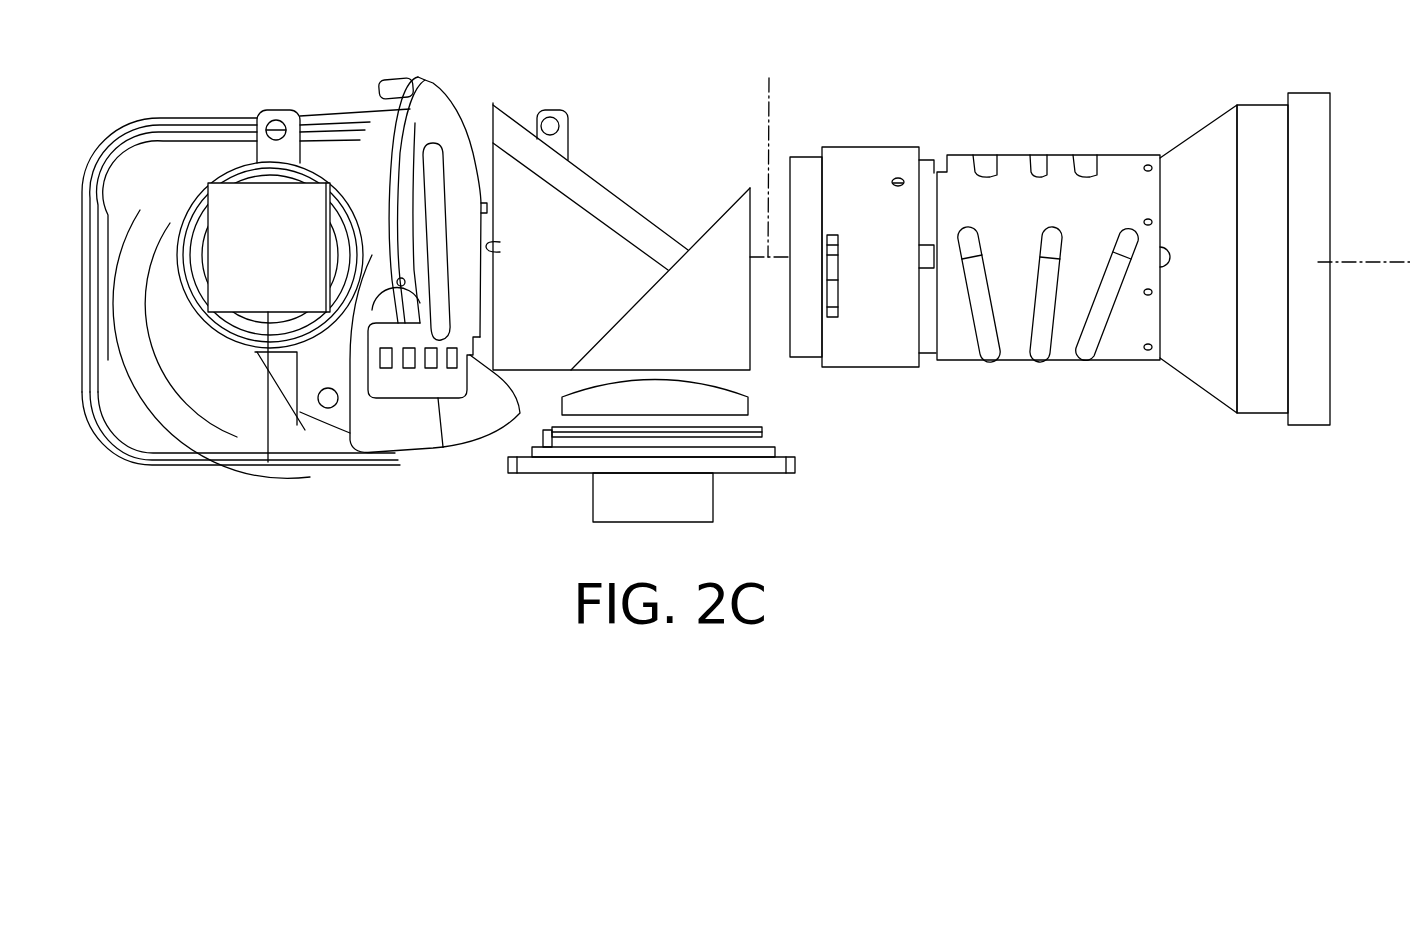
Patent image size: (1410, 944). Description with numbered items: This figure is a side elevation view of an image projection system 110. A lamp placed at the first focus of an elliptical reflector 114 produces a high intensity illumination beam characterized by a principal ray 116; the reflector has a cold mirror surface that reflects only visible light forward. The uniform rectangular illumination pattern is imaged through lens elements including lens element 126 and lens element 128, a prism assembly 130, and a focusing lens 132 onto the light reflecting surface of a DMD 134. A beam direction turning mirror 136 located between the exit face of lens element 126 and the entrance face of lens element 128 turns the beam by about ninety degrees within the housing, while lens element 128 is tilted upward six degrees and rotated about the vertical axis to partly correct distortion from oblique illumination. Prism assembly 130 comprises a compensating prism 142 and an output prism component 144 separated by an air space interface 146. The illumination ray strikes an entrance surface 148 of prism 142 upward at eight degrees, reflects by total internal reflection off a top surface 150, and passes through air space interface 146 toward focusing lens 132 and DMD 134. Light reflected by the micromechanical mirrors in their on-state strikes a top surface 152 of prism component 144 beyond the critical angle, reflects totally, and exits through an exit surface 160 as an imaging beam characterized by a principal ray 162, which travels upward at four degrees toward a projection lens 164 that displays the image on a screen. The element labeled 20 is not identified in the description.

The light beam path 20 is at (488, 79).
The image projection system 110 is at (417, 541).
The elliptical reflector 114 is at (157, 423).
The principal ray 116 is at (487, 213).
The lens element 126 is at (275, 183).
The lens element 128 is at (350, 430).
The prism assembly 130 is at (650, 140).
The focusing lens 132 is at (733, 405).
The DMD 134 is at (755, 436).
The beam direction turning mirror 136 is at (288, 272).
The compensating prism 142 is at (597, 311).
The output prism component 144 is at (708, 340).
The air space interface 146 is at (627, 300).
The entrance surface 148 is at (500, 250).
The top surface 150 is at (607, 195).
The top surface 152 is at (719, 217).
The exit surface 160 is at (750, 333).
The principal ray 162 is at (1377, 187).
The projection lens 164 is at (1066, 162).